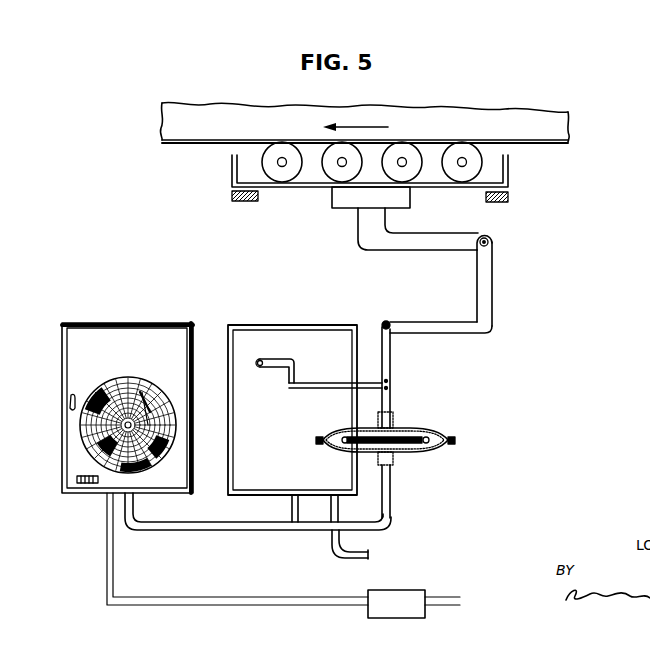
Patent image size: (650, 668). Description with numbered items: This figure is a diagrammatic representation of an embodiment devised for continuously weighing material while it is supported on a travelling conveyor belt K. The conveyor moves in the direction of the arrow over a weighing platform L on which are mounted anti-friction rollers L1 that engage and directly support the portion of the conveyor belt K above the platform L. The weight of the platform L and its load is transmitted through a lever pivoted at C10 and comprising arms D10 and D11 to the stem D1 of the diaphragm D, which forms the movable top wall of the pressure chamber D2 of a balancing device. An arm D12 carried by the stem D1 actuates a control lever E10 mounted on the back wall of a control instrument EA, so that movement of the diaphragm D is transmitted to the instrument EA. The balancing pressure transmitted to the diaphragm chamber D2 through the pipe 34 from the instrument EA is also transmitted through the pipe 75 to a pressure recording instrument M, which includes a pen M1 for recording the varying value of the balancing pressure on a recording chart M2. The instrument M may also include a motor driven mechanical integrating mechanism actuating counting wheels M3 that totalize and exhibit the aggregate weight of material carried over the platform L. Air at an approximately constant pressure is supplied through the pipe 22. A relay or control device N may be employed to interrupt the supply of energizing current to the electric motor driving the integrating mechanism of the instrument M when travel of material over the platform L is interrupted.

The conveyor belt K is at (568, 143).
The weighing platform L is at (508, 175).
The anti-friction rollers L1 is at (460, 173).
The lever pivot C10 is at (488, 240).
The lever arm D10 is at (436, 240).
The lever arm D11 is at (419, 328).
The arm D12 is at (314, 384).
The diaphragm stem D1 is at (392, 401).
The pressure chamber D2 is at (400, 447).
The diaphragm D is at (432, 456).
The control lever E10 is at (272, 352).
The control instrument EA is at (258, 335).
The pressure recording instrument M is at (125, 407).
The pen M1 is at (147, 392).
The recording chart M2 is at (106, 388).
The counting wheels M3 is at (78, 499).
The pipe 75 is at (180, 524).
The pipe 34 is at (346, 524).
The pipe 22 is at (331, 550).
The relay N is at (399, 590).